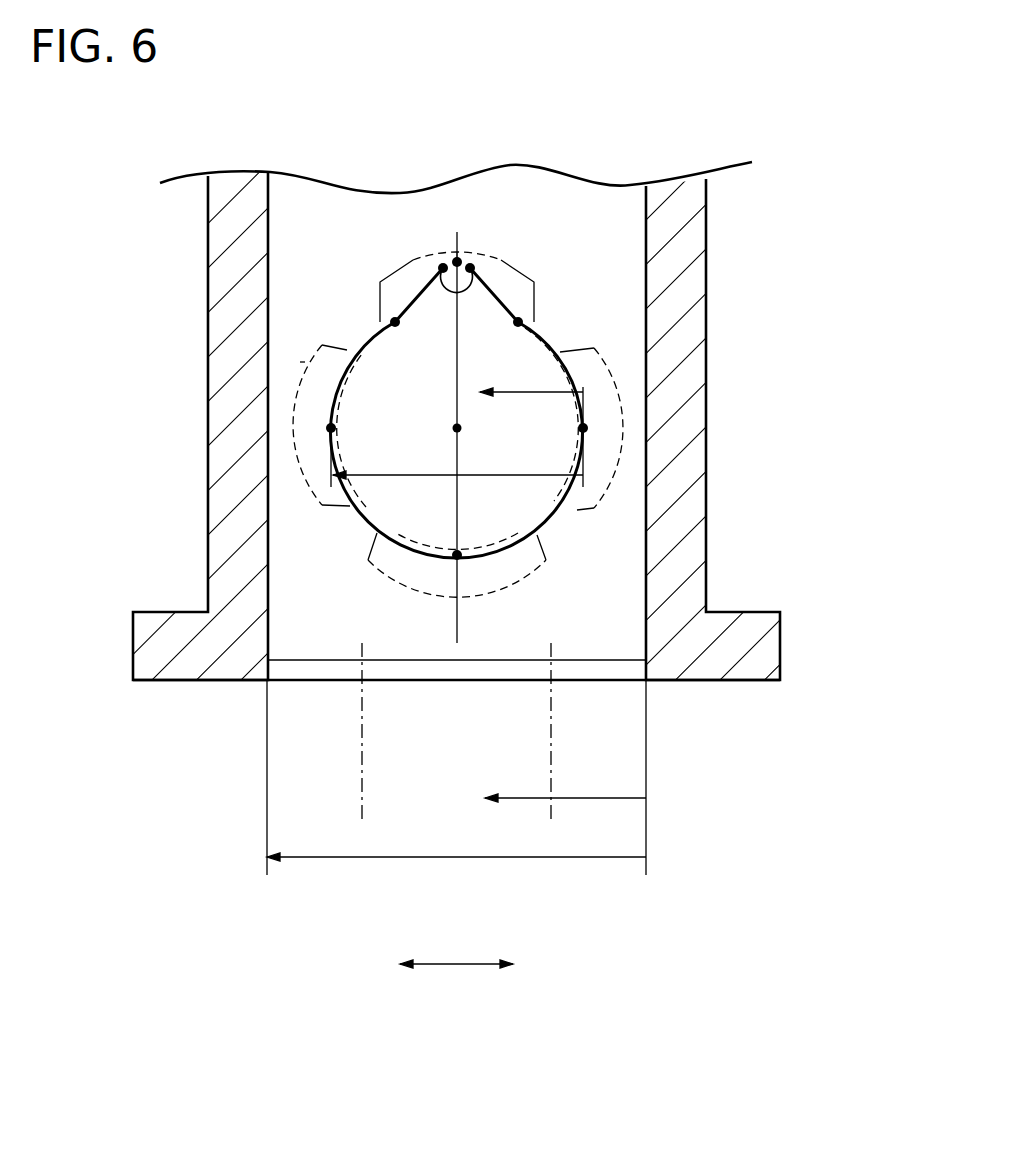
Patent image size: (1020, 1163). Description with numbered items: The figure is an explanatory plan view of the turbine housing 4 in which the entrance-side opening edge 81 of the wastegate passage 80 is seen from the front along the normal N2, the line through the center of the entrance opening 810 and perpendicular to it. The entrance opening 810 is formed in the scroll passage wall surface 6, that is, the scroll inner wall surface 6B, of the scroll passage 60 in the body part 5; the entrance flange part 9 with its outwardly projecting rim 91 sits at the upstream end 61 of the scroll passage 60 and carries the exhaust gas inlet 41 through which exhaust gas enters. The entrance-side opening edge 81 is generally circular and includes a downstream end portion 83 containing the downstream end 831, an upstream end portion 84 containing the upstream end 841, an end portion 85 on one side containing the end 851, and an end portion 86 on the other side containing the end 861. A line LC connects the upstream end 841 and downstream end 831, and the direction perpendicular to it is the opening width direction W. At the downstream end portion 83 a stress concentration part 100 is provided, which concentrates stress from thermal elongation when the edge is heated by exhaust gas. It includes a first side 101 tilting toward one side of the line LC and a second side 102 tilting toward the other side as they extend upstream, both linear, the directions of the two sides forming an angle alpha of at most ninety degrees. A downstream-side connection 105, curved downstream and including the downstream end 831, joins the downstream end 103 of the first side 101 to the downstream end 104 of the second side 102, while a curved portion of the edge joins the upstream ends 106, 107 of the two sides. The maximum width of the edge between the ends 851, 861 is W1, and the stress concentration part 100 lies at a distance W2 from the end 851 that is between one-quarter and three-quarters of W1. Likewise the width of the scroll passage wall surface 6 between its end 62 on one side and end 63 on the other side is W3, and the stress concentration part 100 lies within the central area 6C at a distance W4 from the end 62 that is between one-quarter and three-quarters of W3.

The turbine housing 4 is at (510, 581).
The body part 5 is at (510, 581).
The scroll passage wall surface 6 is at (204, 334).
The scroll inner wall surface 6B is at (305, 362).
The central area 6C is at (484, 649).
The entrance flange part 9 is at (510, 581).
The rim 91 is at (150, 610).
The exhaust gas inlet 41 is at (646, 682).
The scroll passage 60 is at (456, 453).
The upstream end 61 is at (456, 480).
The end on one side 62 is at (660, 572).
The end on the other side 63 is at (510, 581).
The wastegate passage 80 is at (584, 440).
The entrance opening 810 is at (584, 440).
The entrance-side opening edge 81 is at (449, 586).
The downstream end portion 83 is at (395, 258).
The upstream end portion 84 is at (540, 560).
The end portion on one side 85 is at (594, 508).
The end portion on the other side 86 is at (323, 513).
The downstream end 831 is at (460, 262).
The upstream end 841 is at (457, 555).
The end on one side 851 is at (583, 428).
The end on the other side 861 is at (331, 428).
The stress concentration part 100 is at (456, 259).
The first side 101 is at (456, 294).
The second side 102 is at (522, 288).
The downstream end of the first side 103 is at (443, 268).
The downstream end of the second side 104 is at (470, 268).
The downstream-side connection 105 is at (457, 262).
The upstream end of the first side 106 is at (395, 322).
The upstream end of the second side 107 is at (518, 322).
The normal N2 is at (457, 428).
The distance from one end to the other end W1 is at (457, 437).
The distance from the one end to the downstream end portion W2 is at (531, 379).
The distance from end on one side to end on the other side W3 is at (456, 777).
The distance from the one end to the stress concentration part W4 is at (565, 782).
The opening width direction W is at (458, 962).
The line connecting the upstream end and the downstream end LC is at (457, 632).
The angle alpha is at (444, 292).